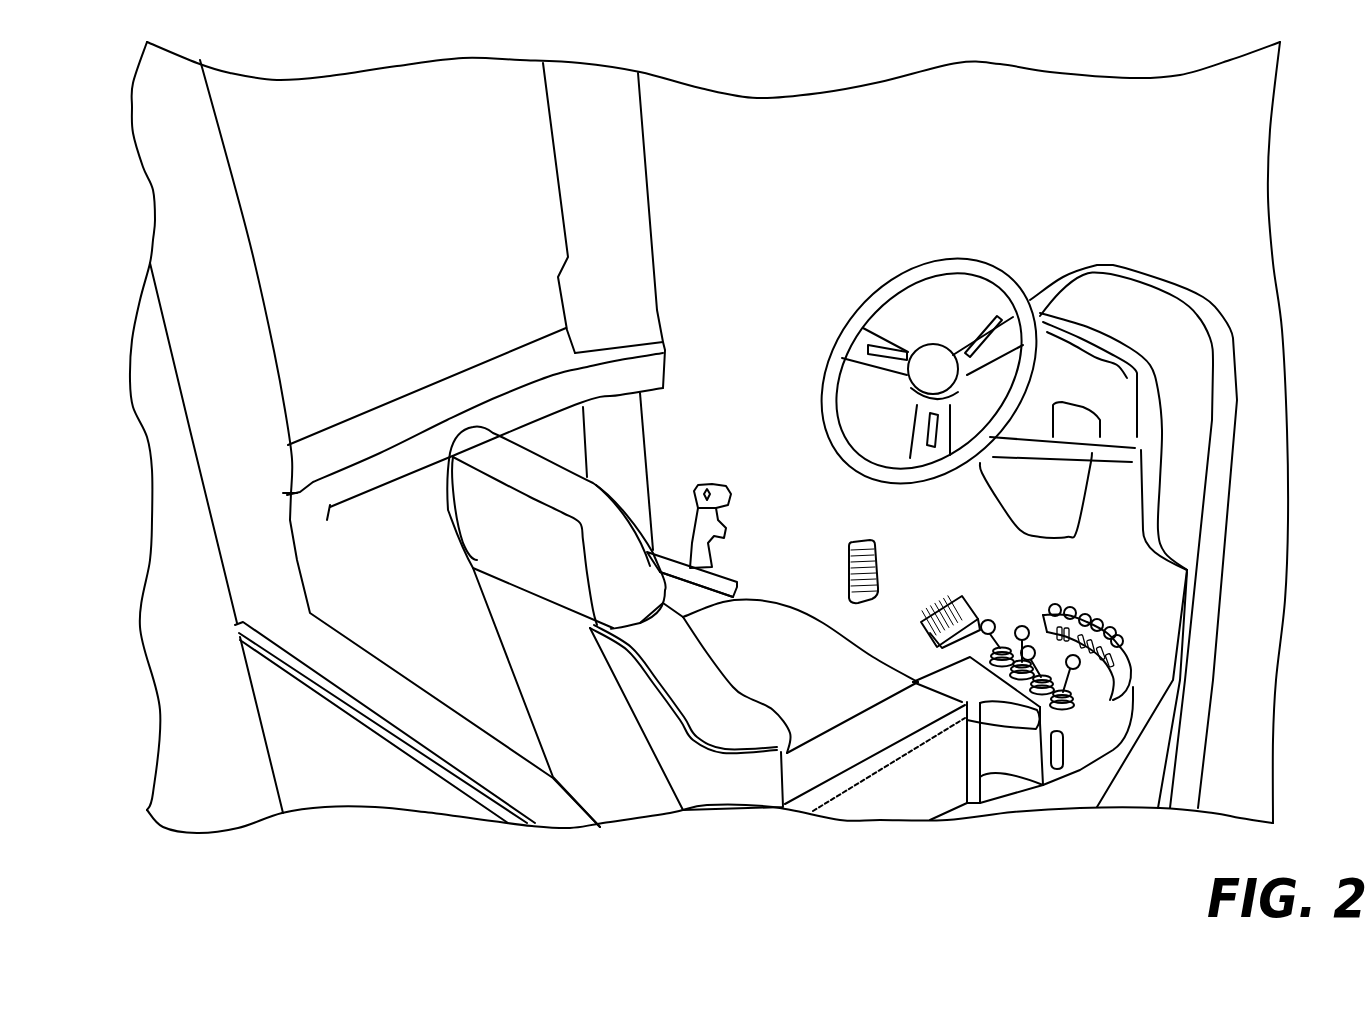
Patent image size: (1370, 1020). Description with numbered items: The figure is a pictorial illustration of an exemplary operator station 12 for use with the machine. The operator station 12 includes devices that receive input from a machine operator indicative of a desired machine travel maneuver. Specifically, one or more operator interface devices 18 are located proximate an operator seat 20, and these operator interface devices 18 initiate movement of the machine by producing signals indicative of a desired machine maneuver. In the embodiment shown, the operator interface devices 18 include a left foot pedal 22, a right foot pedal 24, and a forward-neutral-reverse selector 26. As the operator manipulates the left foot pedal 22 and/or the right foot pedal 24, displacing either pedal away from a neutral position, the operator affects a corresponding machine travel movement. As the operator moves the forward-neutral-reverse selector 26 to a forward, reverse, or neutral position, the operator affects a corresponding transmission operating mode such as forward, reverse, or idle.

The operator station 12 is at (1213, 166).
The operator interface devices 18 is at (1141, 626).
The operator seat 20 is at (600, 510).
The left foot pedal 22 is at (850, 563).
The right foot pedal 24 is at (932, 612).
The forward-neutral-reverse (FNR) selector 26 is at (993, 620).